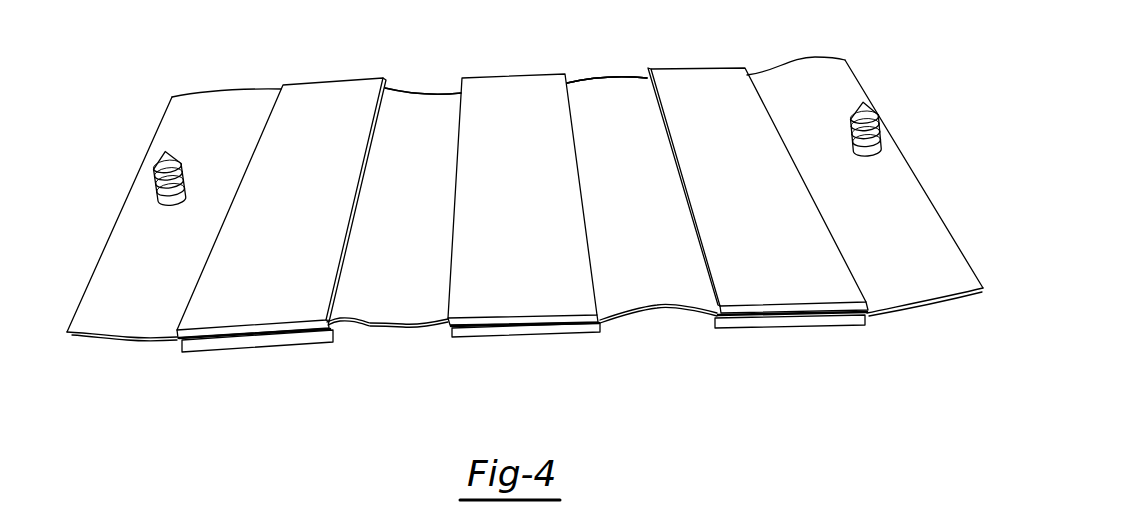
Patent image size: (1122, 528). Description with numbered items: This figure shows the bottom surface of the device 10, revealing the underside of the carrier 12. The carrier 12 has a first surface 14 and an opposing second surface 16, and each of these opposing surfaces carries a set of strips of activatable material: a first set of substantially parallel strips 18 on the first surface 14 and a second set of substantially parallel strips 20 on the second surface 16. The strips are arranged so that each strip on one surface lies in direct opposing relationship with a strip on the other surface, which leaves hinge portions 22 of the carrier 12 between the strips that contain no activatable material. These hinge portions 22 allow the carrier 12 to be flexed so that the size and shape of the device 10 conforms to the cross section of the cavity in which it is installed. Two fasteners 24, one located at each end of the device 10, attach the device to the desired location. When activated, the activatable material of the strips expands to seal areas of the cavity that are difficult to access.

The device 10 is at (166, 71).
The carrier 12 is at (237, 105).
The first surface 14 is at (381, 337).
The second surface 16 is at (607, 107).
The first set of substantially parallel strips 18 is at (252, 343).
The second set of substantially parallel strips 20 is at (313, 164).
The hinge portions 22 is at (423, 192).
The fasteners 24 is at (160, 178).